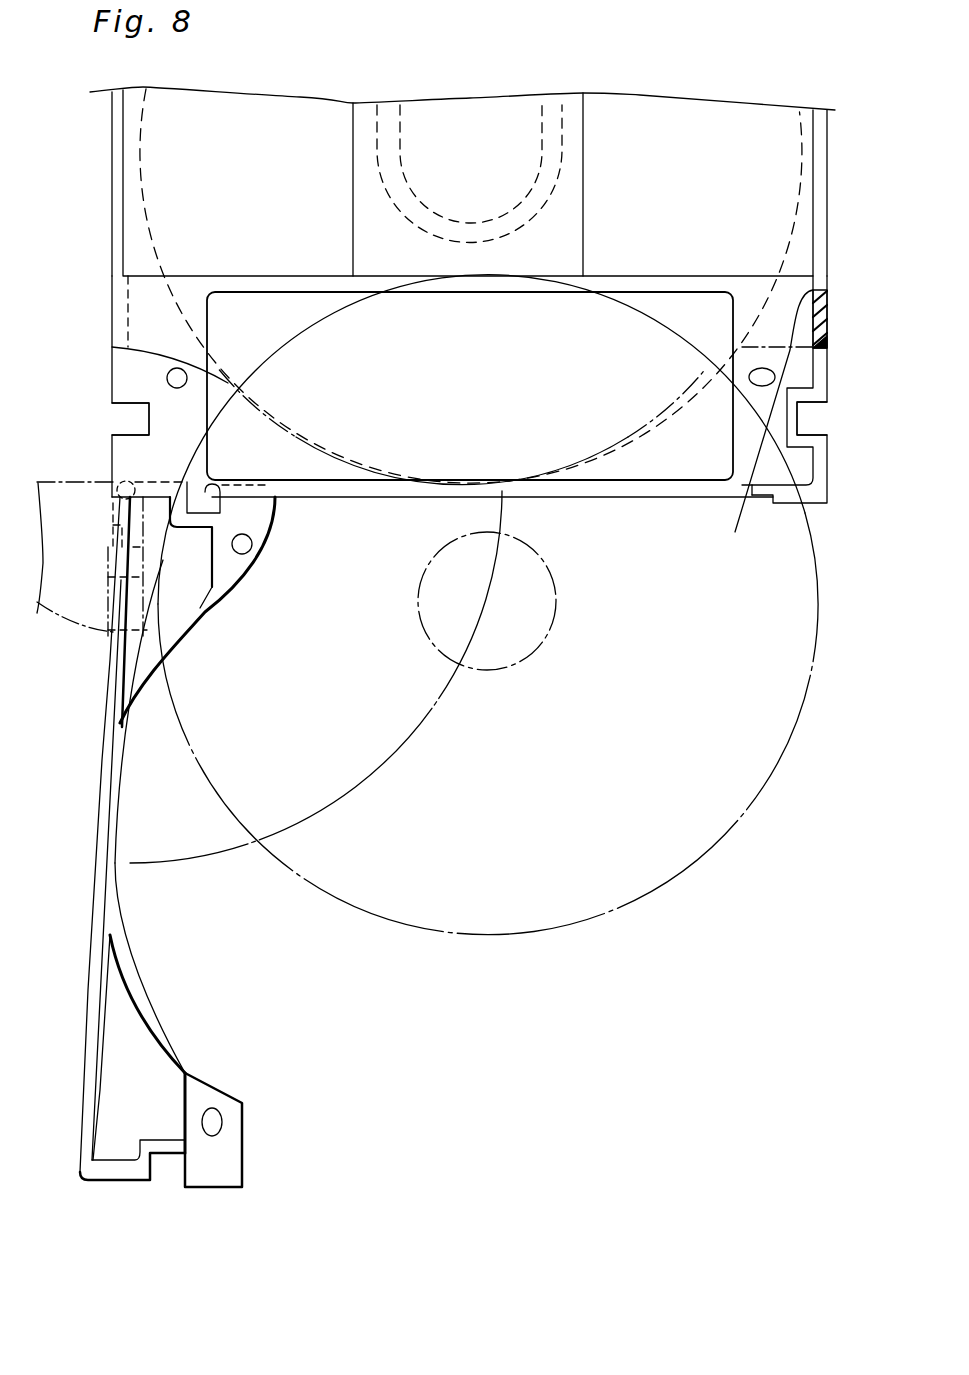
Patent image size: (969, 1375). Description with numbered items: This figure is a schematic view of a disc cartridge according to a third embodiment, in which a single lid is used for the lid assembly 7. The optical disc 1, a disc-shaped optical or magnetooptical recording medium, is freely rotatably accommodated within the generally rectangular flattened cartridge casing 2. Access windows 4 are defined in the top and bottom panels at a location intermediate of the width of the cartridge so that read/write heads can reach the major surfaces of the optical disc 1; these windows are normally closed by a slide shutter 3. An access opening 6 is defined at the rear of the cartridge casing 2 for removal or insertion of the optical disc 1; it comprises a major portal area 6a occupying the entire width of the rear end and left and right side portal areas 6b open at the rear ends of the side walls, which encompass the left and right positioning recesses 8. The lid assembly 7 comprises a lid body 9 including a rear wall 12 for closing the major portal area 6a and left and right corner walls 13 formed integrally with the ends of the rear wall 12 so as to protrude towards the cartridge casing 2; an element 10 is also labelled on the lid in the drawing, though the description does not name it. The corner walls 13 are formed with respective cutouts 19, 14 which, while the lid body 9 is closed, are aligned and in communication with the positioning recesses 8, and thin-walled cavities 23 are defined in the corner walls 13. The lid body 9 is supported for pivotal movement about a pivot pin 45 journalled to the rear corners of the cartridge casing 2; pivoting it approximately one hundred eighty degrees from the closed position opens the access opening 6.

The optical disc 1 is at (150, 245).
The cartridge casing 2 is at (112, 140).
The slide shutter 3 is at (352, 118).
The access windows 4 is at (549, 110).
The access opening 6 is at (598, 492).
The major portal area 6a is at (753, 497).
The side portal areas 6b is at (125, 357).
The lid assembly 7 is at (131, 908).
The positioning recesses 8 is at (128, 417).
The lid body 9 is at (162, 1028).
The arm body 10 is at (127, 760).
The rear wall 12 is at (102, 767).
The corner walls 13 is at (227, 577).
The cutout 14 is at (155, 1170).
The cutout 19 is at (212, 497).
The thin-walled cavities 23 is at (173, 603).
The pivot pin 45 is at (118, 472).